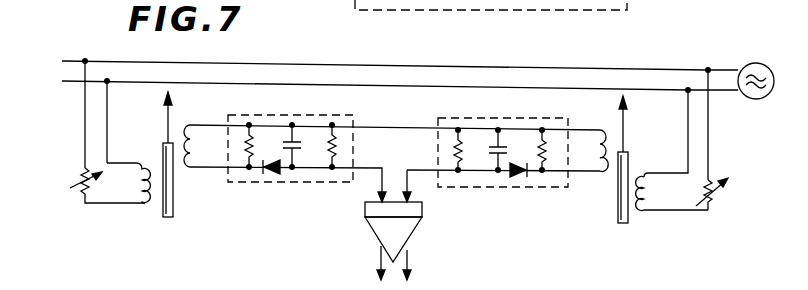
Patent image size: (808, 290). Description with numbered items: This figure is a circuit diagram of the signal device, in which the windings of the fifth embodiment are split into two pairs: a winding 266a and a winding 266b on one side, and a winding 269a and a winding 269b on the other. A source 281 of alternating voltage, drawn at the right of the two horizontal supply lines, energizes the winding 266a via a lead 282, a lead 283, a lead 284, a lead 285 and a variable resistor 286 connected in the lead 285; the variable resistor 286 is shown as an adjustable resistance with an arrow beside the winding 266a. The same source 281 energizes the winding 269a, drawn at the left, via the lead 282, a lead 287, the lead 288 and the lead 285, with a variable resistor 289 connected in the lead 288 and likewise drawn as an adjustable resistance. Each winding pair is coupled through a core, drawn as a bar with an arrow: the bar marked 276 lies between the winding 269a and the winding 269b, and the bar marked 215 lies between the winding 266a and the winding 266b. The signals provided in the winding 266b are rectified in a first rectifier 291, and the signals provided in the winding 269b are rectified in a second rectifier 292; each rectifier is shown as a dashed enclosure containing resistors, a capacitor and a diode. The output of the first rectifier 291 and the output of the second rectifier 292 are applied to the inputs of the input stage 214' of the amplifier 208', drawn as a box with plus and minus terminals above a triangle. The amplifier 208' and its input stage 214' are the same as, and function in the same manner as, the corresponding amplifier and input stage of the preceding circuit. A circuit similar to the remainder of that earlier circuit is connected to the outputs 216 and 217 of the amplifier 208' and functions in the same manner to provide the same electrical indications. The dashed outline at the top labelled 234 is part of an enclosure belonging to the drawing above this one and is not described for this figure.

The dashed enclosure (from figure above) 234 is at (483, 8).
The lead 282 is at (532, 88).
The lead 285 is at (622, 69).
The source of alternating voltage 281 is at (762, 64).
The lead 287 is at (106, 98).
The lead 288 is at (84, 124).
The variable resistor 289 is at (82, 168).
The winding 269a is at (137, 162).
The winding 269b is at (206, 113).
The magnetic core 276 is at (159, 171).
The second rectifier 292 is at (312, 117).
The first rectifier 291 is at (480, 118).
The winding 266b is at (600, 116).
The winding 266a is at (650, 212).
The magnetic core 215 is at (618, 213).
The lead 283 is at (688, 124).
The lead 284 is at (710, 129).
The variable resistor 286 is at (733, 194).
The input stage 214' is at (335, 205).
The amplifier 208' is at (419, 230).
The output 216 is at (381, 250).
The output 217 is at (407, 258).